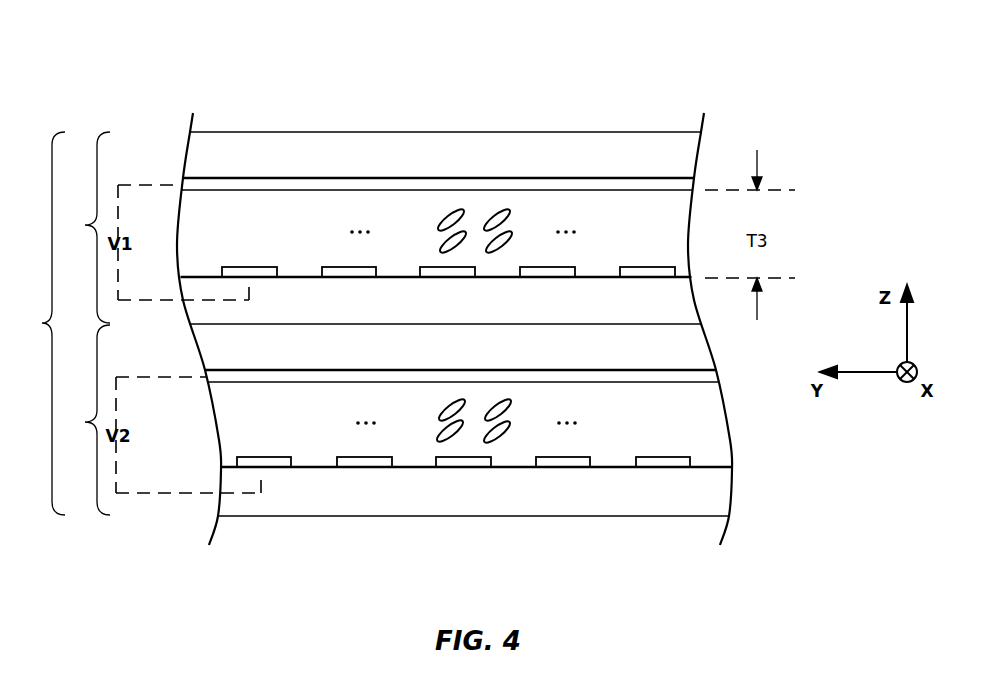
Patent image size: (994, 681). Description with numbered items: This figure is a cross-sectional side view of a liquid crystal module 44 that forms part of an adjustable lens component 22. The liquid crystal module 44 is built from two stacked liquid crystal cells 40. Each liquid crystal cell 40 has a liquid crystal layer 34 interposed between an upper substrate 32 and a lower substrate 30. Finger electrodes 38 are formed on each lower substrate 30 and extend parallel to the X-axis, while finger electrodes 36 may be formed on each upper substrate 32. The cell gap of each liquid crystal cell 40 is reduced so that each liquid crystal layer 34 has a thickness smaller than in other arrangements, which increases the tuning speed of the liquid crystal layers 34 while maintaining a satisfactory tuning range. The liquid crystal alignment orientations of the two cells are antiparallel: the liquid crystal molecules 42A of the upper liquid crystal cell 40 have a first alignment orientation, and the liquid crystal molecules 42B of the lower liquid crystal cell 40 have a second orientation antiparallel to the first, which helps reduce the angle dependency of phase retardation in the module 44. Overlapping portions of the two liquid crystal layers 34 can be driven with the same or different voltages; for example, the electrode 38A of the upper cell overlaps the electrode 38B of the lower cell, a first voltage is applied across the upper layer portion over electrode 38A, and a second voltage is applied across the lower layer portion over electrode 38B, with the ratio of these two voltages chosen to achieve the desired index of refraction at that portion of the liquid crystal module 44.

The adjustable lens component 22 is at (786, 68).
The lower substrate 30 is at (686, 305).
The upper substrate 32 is at (590, 138).
The liquid crystal layer 34 is at (640, 200).
The finger electrodes 36 is at (527, 183).
The finger electrodes 38 is at (362, 462).
The electrode 38A is at (248, 270).
The electrode 38B is at (270, 461).
The liquid crystal cell 40 is at (84, 323).
The liquid crystal molecules 42A is at (443, 213).
The liquid crystal molecules 42B is at (456, 440).
The liquid crystal module 44 is at (41, 323).